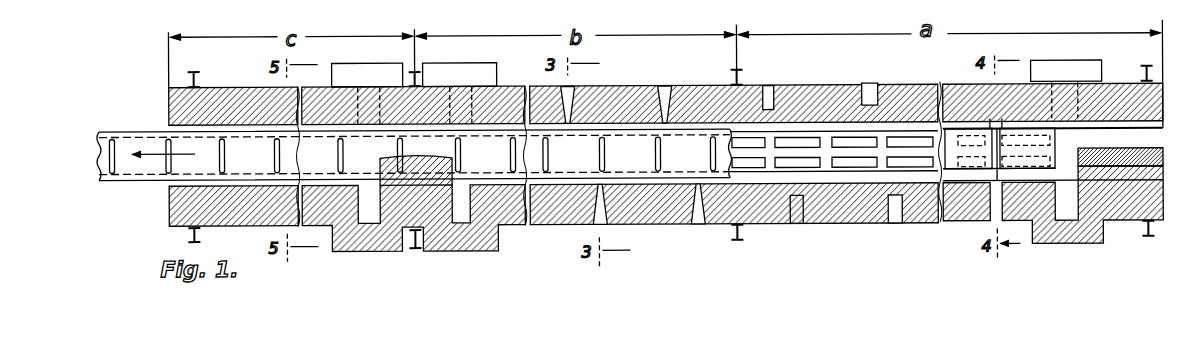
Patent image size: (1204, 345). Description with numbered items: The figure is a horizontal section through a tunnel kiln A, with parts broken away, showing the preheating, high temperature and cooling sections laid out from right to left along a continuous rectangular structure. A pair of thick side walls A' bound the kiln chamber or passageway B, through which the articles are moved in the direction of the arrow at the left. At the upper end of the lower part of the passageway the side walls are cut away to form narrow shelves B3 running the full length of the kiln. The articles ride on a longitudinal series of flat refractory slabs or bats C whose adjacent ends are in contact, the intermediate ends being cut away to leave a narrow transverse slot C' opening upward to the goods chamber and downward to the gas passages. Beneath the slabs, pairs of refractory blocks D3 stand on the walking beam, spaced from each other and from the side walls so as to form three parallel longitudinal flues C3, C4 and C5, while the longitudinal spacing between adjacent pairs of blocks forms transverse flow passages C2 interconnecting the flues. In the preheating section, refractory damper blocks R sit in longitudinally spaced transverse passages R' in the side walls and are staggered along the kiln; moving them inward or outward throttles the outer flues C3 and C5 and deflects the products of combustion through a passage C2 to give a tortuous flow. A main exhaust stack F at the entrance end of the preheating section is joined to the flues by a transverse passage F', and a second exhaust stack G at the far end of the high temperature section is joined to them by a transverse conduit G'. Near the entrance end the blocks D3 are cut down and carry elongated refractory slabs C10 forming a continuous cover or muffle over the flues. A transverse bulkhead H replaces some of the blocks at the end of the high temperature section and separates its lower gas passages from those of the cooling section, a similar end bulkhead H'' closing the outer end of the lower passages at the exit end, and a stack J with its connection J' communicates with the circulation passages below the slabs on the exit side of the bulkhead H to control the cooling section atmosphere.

The tunnel kiln A is at (666, 91).
The side walls A' is at (666, 216).
The kiln chamber or passageway B is at (1160, 137).
The shelves B3 is at (925, 125).
The refractory slabs or bats C is at (414, 154).
The transverse slot C' is at (412, 155).
The transverse flow passages C2 is at (834, 155).
The longitudinal flue or passage C3 is at (880, 172).
The longitudinal flue or passage C4 is at (850, 150).
The longitudinal flue or passage C5 is at (874, 137).
The elongated refractory slabs C10 is at (1050, 152).
The refractory blocks D3 is at (985, 140).
The main exhaust stack F is at (1066, 56).
The transverse passage F' is at (1058, 76).
The second exhaust stack G is at (467, 64).
The transverse conduit G' is at (460, 83).
The transverse bulkhead H is at (437, 166).
The filler piece H'' is at (1139, 159).
The stack J is at (366, 64).
The hidden slot J' is at (368, 95).
The damper blocks R is at (763, 80).
The transverse passages R' is at (788, 156).